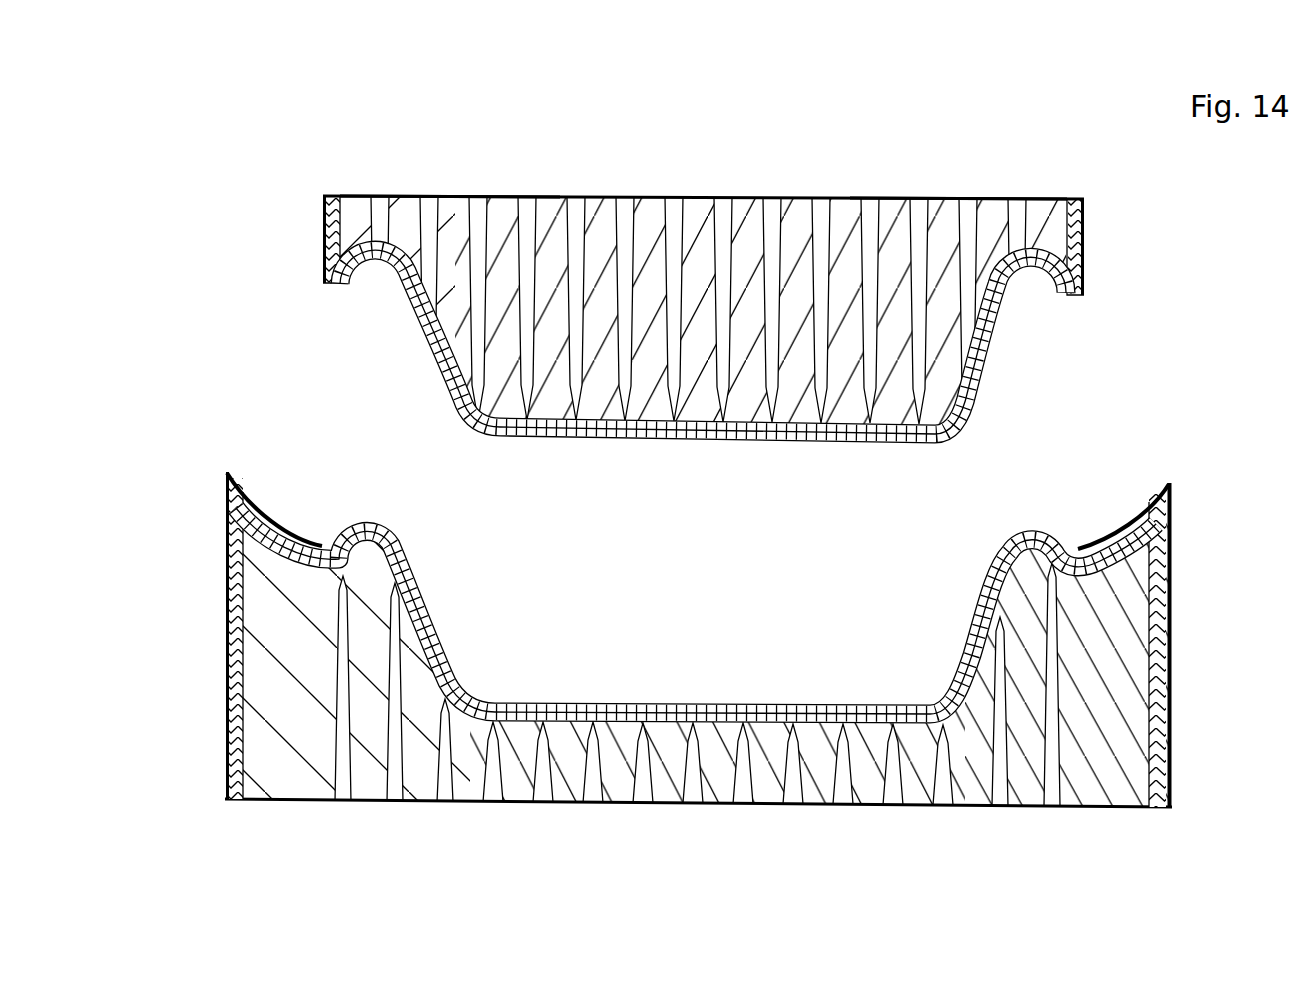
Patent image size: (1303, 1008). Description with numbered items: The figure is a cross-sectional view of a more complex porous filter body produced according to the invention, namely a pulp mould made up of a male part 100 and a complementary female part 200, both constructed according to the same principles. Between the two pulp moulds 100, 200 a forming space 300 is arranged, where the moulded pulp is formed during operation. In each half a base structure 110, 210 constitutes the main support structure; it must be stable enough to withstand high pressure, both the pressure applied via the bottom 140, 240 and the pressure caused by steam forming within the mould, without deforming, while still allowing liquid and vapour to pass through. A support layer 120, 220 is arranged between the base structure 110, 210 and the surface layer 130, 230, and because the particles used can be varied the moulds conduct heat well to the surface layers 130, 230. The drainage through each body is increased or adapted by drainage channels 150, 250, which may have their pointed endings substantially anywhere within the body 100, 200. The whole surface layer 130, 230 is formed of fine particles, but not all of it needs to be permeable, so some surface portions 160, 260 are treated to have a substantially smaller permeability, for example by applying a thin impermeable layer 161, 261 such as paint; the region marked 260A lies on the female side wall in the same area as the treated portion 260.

The male part of pulp mould 100 is at (703, 298).
The base structure 110 is at (747, 197).
The support layer 120 is at (960, 378).
The surface layer 130 is at (990, 326).
The bottom 140 is at (653, 193).
The drainage channel 150 is at (522, 195).
The surface portion 160 is at (1134, 265).
The impermeable layer 161 is at (1085, 263).
The female part of pulp mould 200 is at (664, 630).
The base structure 210 is at (470, 787).
The support layer 220 is at (878, 702).
The surface layer 230 is at (522, 702).
The bottom 240 is at (720, 805).
The drainage channel 250 is at (548, 800).
The surface portion 260 is at (697, 595).
The lip of side wall 260A is at (267, 512).
The impermeable layer 261 is at (1173, 515).
The forming space 300 is at (439, 493).